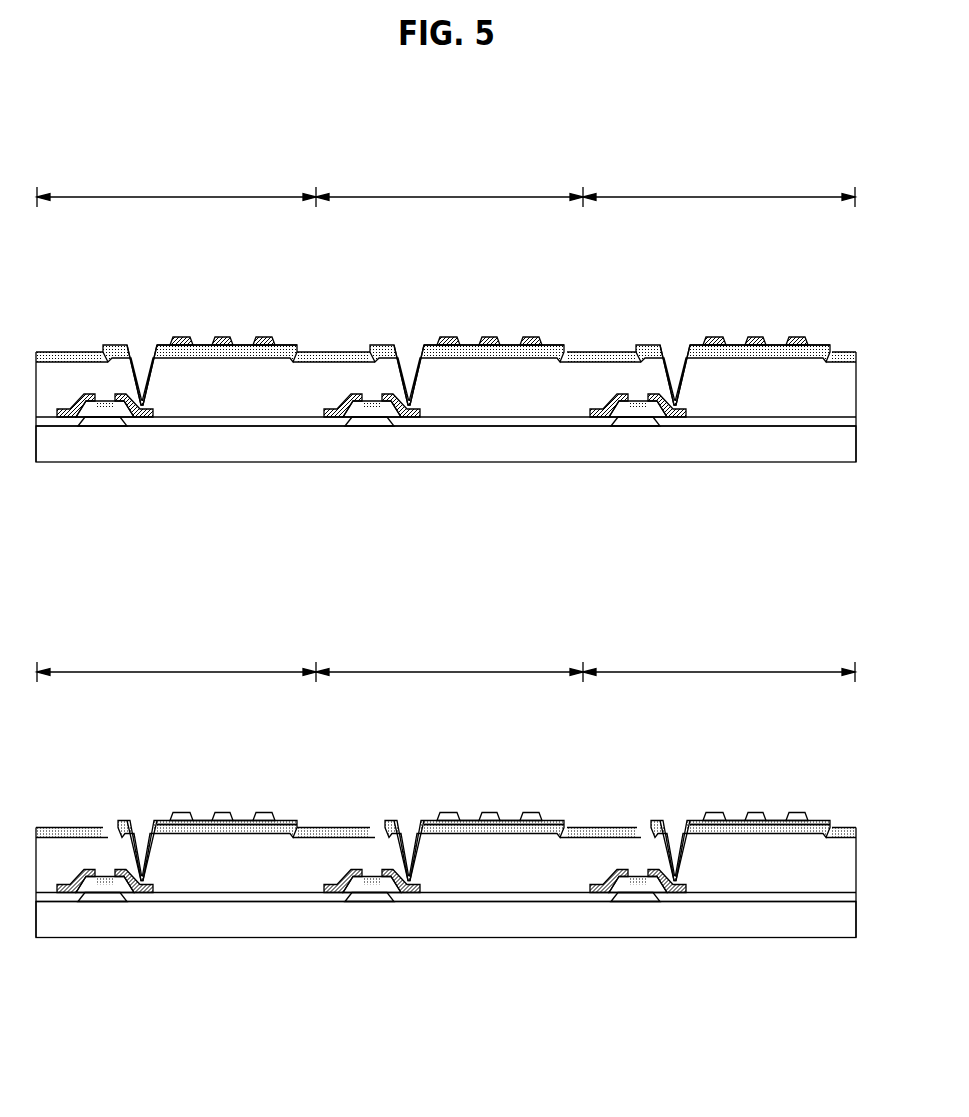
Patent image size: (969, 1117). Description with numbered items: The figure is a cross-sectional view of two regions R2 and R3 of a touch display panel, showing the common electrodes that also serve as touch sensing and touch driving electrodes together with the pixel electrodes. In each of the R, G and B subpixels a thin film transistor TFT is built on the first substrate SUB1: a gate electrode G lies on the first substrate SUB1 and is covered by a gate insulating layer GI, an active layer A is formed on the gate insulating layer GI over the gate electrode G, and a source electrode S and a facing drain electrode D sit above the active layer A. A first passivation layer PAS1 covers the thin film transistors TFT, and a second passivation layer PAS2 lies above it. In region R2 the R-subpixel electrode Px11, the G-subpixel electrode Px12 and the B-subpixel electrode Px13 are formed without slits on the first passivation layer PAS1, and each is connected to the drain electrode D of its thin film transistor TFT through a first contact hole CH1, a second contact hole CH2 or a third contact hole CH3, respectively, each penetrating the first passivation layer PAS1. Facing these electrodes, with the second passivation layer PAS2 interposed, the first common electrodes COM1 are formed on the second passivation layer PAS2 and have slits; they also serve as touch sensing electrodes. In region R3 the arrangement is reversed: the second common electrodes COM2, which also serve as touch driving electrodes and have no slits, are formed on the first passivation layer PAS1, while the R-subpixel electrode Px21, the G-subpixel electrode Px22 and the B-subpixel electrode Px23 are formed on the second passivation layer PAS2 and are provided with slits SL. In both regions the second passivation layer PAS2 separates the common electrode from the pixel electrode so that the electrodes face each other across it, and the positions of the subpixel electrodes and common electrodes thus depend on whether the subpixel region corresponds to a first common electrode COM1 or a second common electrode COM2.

The thin film transistor TFT is at (371, 645).
The first contact hole CH1 is at (142, 346).
The second contact hole CH2 is at (409, 346).
The third contact hole CH3 is at (675, 346).
The first common electrode COM1 is at (796, 337).
The second common electrode COM2 is at (836, 796).
The R-subpixel electrode Px11 is at (281, 345).
The G-subpixel electrode Px12 is at (548, 345).
The B-subpixel electrode Px13 is at (814, 345).
The R-subpixel electrode Px21 is at (172, 812).
The G-subpixel electrode Px22 is at (439, 812).
The B-subpixel electrode Px23 is at (705, 812).
The slit SL is at (199, 820).
The source electrode S is at (68, 415).
The gate electrode G is at (88, 426).
The active layer A is at (104, 404).
The drain electrode D is at (136, 415).
The first substrate SUB1 is at (202, 448).
The gate insulating layer GI is at (265, 427).
The first passivation layer PAS1 is at (488, 396).
The second passivation layer PAS2 is at (565, 358).
The region R2 is at (96, 137).
The region R3 is at (96, 612).